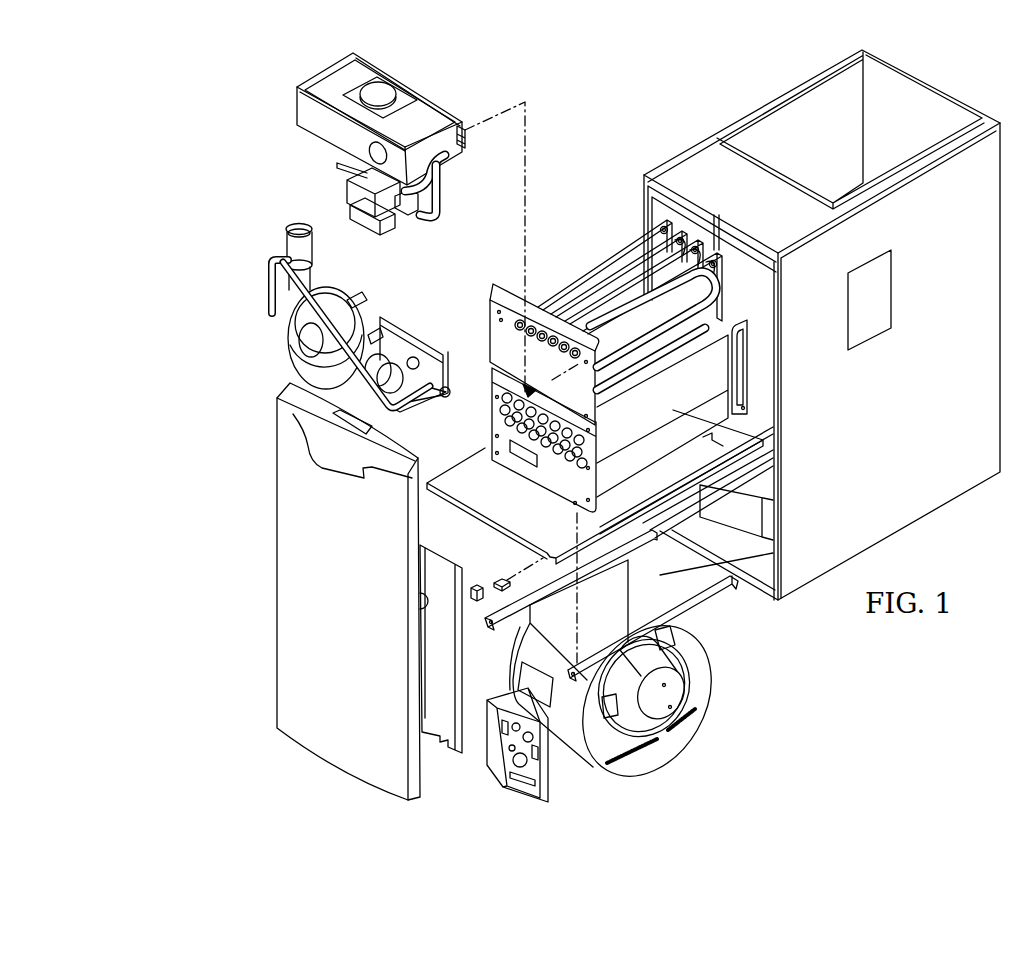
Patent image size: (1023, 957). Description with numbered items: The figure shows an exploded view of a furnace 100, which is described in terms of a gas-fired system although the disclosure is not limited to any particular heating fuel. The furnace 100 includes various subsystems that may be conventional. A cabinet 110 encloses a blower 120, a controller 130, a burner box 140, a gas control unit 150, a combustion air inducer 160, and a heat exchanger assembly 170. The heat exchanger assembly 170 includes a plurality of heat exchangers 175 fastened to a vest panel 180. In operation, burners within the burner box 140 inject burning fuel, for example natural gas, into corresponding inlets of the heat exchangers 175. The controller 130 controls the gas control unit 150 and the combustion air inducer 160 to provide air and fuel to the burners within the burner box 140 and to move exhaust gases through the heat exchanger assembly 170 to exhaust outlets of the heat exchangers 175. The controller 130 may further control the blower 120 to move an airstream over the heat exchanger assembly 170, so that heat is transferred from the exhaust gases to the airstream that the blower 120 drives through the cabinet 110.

The furnace 100 is at (183, 523).
The cabinet 110 is at (920, 419).
The blower 120 is at (712, 657).
The controller 130 is at (498, 766).
The burner box 140 is at (297, 105).
The gas control unit 150 is at (345, 178).
The combustion air inducer 160 is at (343, 290).
The heat exchanger assembly 170 is at (590, 262).
The heat exchangers 175 is at (633, 235).
The vest panel 180 is at (585, 457).